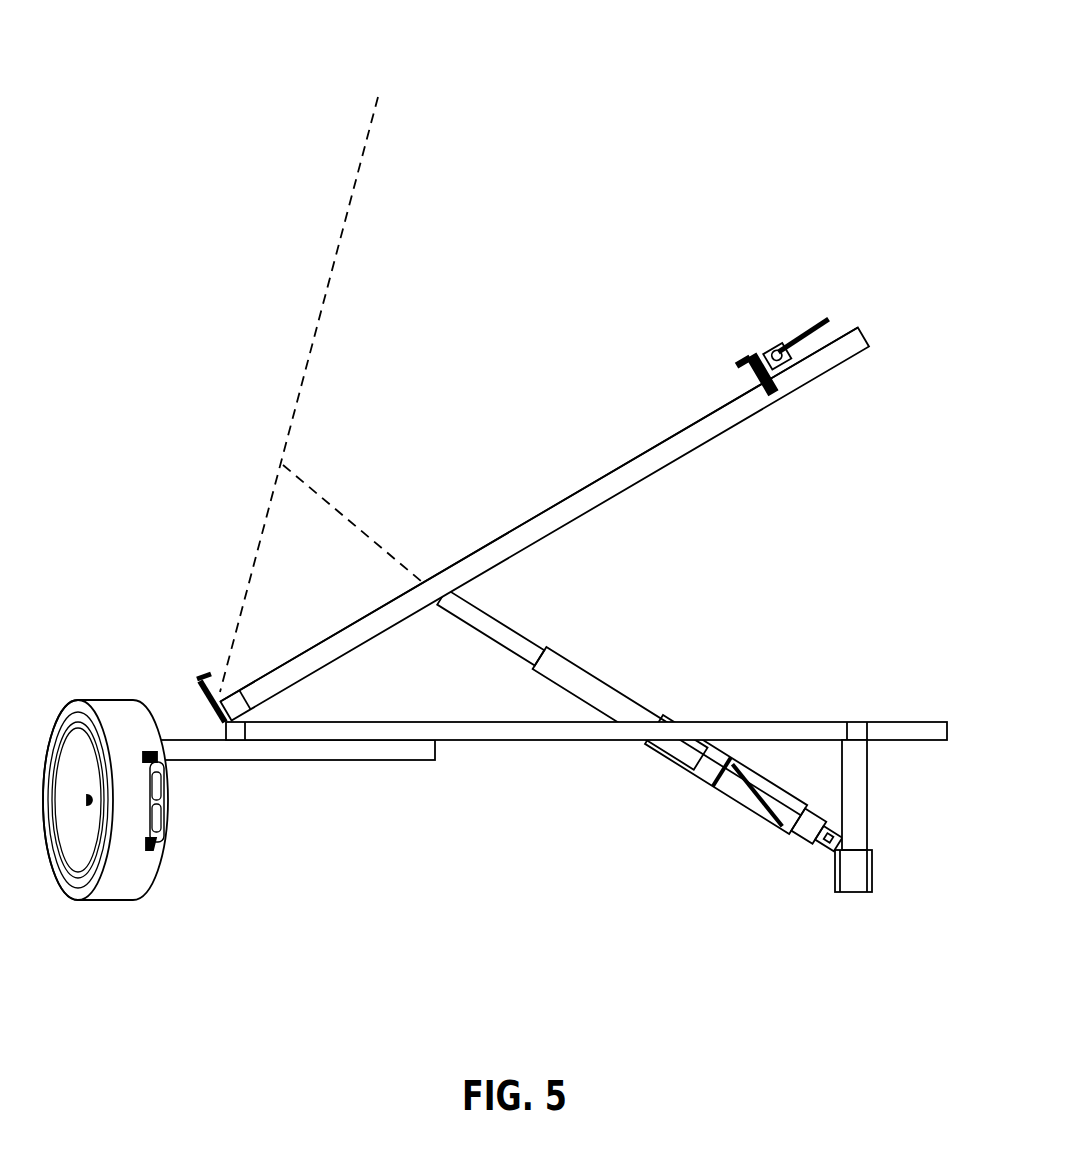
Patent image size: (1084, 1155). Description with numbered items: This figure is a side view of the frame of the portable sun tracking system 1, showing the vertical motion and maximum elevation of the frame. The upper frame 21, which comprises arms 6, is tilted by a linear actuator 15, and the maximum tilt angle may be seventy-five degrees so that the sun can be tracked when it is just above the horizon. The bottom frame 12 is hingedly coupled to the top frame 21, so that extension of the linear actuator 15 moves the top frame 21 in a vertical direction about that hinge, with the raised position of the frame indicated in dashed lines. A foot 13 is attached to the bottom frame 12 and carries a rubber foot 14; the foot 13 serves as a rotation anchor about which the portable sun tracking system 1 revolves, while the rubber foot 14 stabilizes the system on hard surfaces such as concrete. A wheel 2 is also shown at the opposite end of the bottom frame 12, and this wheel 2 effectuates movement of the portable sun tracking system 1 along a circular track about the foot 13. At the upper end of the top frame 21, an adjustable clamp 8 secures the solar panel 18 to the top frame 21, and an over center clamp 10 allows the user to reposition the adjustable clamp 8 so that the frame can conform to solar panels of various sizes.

The portable sun tracking system 1 is at (258, 143).
The wheel 2 is at (122, 865).
The arms 6 is at (534, 445).
The adjustable clamp 8 is at (785, 368).
The over center clamp 10 is at (804, 327).
The bottom frame 12 is at (587, 722).
The foot 13 is at (857, 795).
The rubber foot 14 is at (857, 877).
The linear actuator 15 is at (625, 705).
The solar panel 18 is at (318, 312).
The upper frame 21 is at (652, 430).